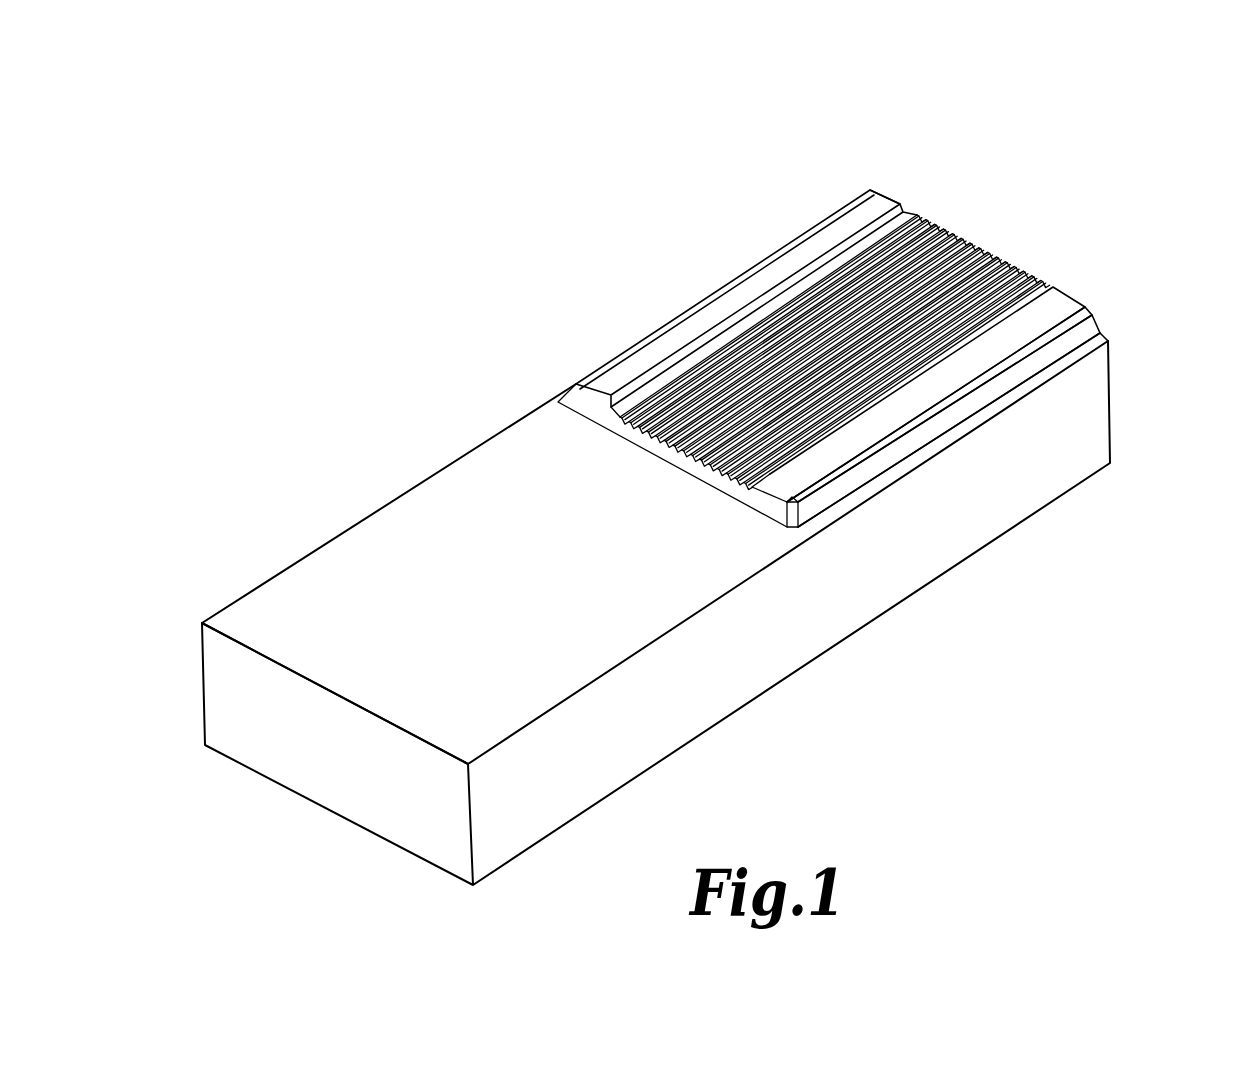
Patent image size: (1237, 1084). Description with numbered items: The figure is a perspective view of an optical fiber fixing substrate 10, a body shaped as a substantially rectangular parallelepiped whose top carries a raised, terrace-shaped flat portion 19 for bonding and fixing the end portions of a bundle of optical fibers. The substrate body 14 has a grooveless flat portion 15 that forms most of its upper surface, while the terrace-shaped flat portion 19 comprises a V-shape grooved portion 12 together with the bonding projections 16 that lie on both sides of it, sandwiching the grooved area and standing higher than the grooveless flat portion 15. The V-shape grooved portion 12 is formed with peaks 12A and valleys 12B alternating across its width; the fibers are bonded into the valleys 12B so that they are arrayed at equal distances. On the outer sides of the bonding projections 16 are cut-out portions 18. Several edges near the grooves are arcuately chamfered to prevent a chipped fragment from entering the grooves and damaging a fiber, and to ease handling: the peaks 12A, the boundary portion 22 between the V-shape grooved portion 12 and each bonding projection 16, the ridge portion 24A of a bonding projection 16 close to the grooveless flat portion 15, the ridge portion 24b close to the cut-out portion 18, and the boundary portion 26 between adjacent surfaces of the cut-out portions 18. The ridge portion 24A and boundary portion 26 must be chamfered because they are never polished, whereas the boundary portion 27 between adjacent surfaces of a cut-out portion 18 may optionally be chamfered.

The optical fiber fixing substrate 10 is at (433, 449).
The V-shape grooved portion 12 is at (809, 344).
The peaks 12A is at (660, 442).
The valleys 12B is at (623, 435).
The substrate body 14 is at (252, 588).
The grooveless flat portion 15 is at (328, 550).
The bonding projections 16 is at (877, 202).
The cut-out portions 18 is at (993, 413).
The terrace-shaped flat portion 19 is at (833, 343).
The boundary portion 22 is at (723, 325).
The ridge portion 24A is at (773, 492).
The ridge portion 24b is at (857, 467).
The boundary portion 26 is at (793, 514).
The boundary portion 27 is at (927, 452).